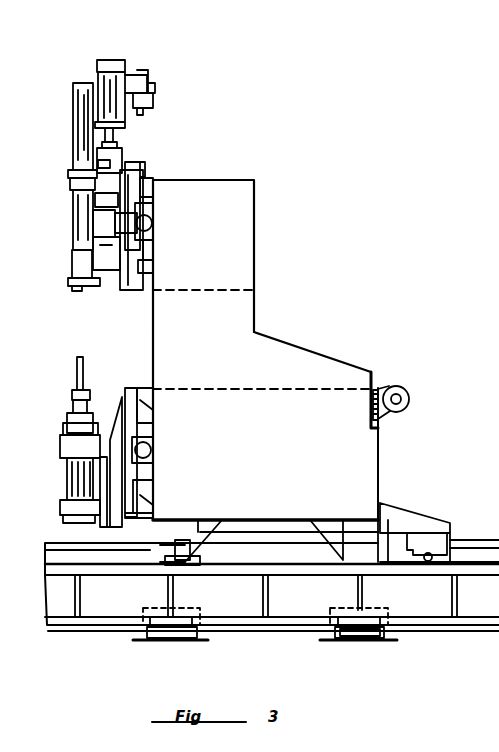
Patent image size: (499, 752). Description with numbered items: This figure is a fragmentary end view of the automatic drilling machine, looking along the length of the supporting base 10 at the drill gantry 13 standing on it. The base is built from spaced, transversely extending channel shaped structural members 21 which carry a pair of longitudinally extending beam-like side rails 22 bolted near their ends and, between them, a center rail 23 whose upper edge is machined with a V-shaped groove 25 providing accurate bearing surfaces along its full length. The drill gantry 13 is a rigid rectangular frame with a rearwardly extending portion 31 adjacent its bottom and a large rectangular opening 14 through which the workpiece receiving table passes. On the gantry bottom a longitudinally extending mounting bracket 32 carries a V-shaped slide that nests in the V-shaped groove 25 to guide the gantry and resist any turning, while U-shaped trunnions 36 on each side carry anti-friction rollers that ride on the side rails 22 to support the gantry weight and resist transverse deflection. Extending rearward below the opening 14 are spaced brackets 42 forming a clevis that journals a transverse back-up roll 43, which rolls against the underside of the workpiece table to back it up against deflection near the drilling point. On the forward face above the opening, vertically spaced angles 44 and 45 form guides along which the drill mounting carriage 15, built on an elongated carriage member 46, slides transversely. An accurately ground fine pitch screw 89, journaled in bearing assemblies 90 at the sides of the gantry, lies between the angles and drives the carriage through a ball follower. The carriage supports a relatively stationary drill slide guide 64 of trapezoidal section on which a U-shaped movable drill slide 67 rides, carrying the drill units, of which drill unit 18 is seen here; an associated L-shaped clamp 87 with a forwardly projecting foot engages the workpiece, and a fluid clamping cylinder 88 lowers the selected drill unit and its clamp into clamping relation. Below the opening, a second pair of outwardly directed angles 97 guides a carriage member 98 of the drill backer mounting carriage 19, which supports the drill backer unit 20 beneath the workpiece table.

The supporting base 10 is at (332, 642).
The drill gantry 13 is at (245, 221).
The opening 14 is at (240, 320).
The drill mounting carriage 15 is at (133, 165).
The drill unit 18 is at (78, 125).
The drill backer mounting carriage 19 is at (135, 388).
The drill backer unit 20 is at (72, 412).
The channel shaped structural members 21 is at (380, 642).
The side rails 22 is at (67, 612).
The center rail 23 is at (480, 557).
The V-shaped groove 25 is at (50, 543).
The rearwardly extending portion 31 is at (367, 455).
The mounting bracket 32 is at (397, 543).
The trunnions 36 is at (368, 525).
The brackets 42 is at (380, 390).
The back-up roll 43 is at (406, 393).
The angle 44 is at (155, 180).
The angle 45 is at (148, 273).
The carriage member 46 is at (130, 275).
The drill slide guide 64 is at (93, 252).
The drill slide 67 is at (108, 238).
The L-shaped clamp 87 is at (73, 281).
The fluid clamping cylinder 88 is at (118, 70).
The fine pitch screw 89 is at (487, 336).
The bearing assemblies 90 is at (156, 215).
The angles 97 is at (153, 410).
The carriage member 98 is at (118, 430).